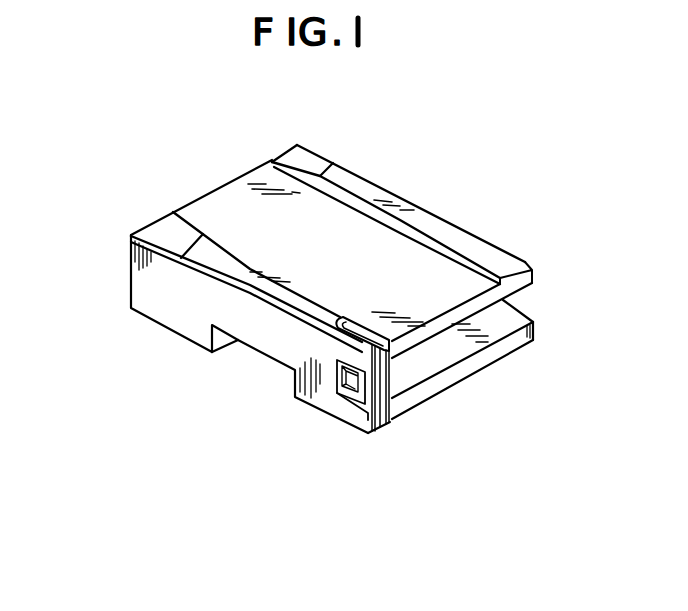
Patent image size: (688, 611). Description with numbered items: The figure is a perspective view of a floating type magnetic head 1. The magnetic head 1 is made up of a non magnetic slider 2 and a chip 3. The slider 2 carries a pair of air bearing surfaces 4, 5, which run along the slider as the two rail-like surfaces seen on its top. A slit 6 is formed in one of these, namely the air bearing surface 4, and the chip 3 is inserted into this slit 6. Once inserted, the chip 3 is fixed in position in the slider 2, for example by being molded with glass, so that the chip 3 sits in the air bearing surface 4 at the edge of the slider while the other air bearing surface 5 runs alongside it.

The magnetic head 1 is at (519, 226).
The non magnetic slider 2 is at (235, 183).
The chip 3 is at (392, 390).
The air bearing surface 4 is at (197, 253).
The air bearing surface 5 is at (407, 197).
The slit 6 is at (338, 316).